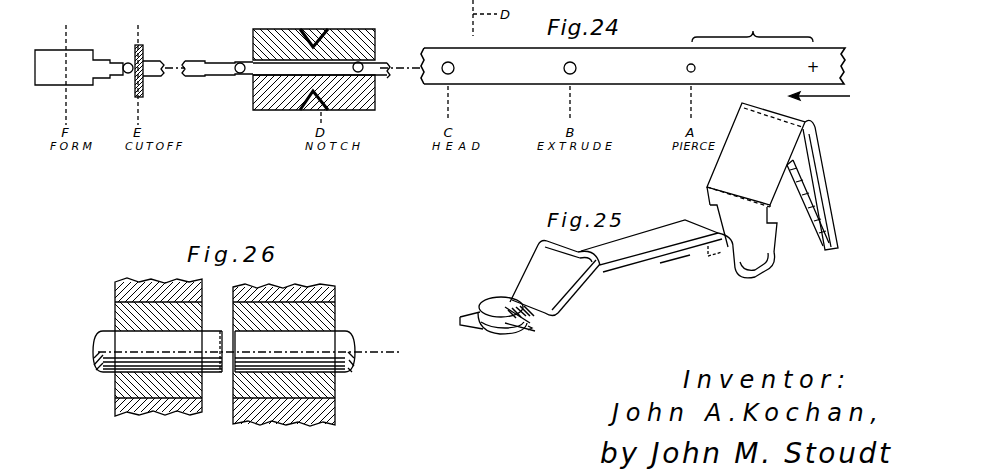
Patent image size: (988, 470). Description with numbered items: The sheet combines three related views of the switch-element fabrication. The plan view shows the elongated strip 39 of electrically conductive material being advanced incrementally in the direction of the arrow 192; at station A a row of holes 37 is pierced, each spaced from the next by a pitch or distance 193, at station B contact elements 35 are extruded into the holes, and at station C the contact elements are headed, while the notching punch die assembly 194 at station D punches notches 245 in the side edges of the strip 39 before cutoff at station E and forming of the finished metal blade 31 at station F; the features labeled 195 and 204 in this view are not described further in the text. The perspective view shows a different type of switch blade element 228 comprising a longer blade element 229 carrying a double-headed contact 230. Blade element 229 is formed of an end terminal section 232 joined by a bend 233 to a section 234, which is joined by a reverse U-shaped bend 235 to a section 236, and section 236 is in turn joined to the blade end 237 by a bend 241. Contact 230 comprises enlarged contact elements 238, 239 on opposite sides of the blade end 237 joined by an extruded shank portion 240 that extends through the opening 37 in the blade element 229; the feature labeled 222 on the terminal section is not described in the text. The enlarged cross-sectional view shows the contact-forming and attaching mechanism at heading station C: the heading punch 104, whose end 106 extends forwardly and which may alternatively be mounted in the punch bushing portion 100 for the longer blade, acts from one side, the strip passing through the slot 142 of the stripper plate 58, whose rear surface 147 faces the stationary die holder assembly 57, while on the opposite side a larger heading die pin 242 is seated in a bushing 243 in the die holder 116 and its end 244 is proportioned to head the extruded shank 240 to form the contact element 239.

In FIG. 24, the metal blade 31 is at (55, 88).
In FIG. 24, the contact element 35 is at (238, 63).
In FIG. 24, the hole 37 is at (688, 71).
In FIG. 25, the hole 37 is at (532, 328).
In FIG. 24, the strip 39 is at (642, 55).
In FIG. 24, the arrow 192 is at (850, 95).
In FIG. 24, the pitch 193 is at (752, 27).
In FIG. 24, the notching punch die assembly 194 is at (250, 94).
In FIG. 24, the notch 195 is at (115, 58).
In FIG. 24, the cutoff blade 204 is at (133, 87).
In FIG. 25, the switch blade element 228 is at (661, 257).
In FIG. 25, the blade element 229 is at (760, 277).
In FIG. 25, the double-headed contact 230 is at (492, 347).
In FIG. 25, the end terminal section 232 is at (825, 187).
In FIG. 25, the bend 233 is at (808, 122).
In FIG. 25, the section 234 is at (762, 145).
In FIG. 25, the reverse U-shaped bend 235 is at (738, 278).
In FIG. 25, the section 236 is at (643, 242).
In FIG. 25, the blade end 237 is at (468, 315).
In FIG. 25, the contact element 238 is at (494, 307).
In FIG. 25, the contact element 239 is at (505, 337).
In FIG. 25, the extruded shank portion 240 is at (513, 323).
In FIG. 25, the bend 241 is at (597, 272).
In FIG. 25, the tang 222 is at (803, 237).
In FIG. 25, the notch 245 is at (742, 218).
In FIG. 26, the stationary die holder assembly 57 is at (315, 353).
In FIG. 26, the stripper plate 58 is at (127, 357).
In FIG. 26, the punch bushing portion 100 is at (133, 386).
In FIG. 26, the heading punch 104 is at (107, 340).
In FIG. 26, the punch end 106 is at (218, 352).
In FIG. 26, the die holder 116 is at (315, 410).
In FIG. 26, the slot 142 is at (213, 317).
In FIG. 26, the rear surface 147 is at (162, 404).
In FIG. 26, the heading die pin 242 is at (333, 342).
In FIG. 26, the bushing 243 is at (320, 386).
In FIG. 26, the die pin end 244 is at (238, 345).